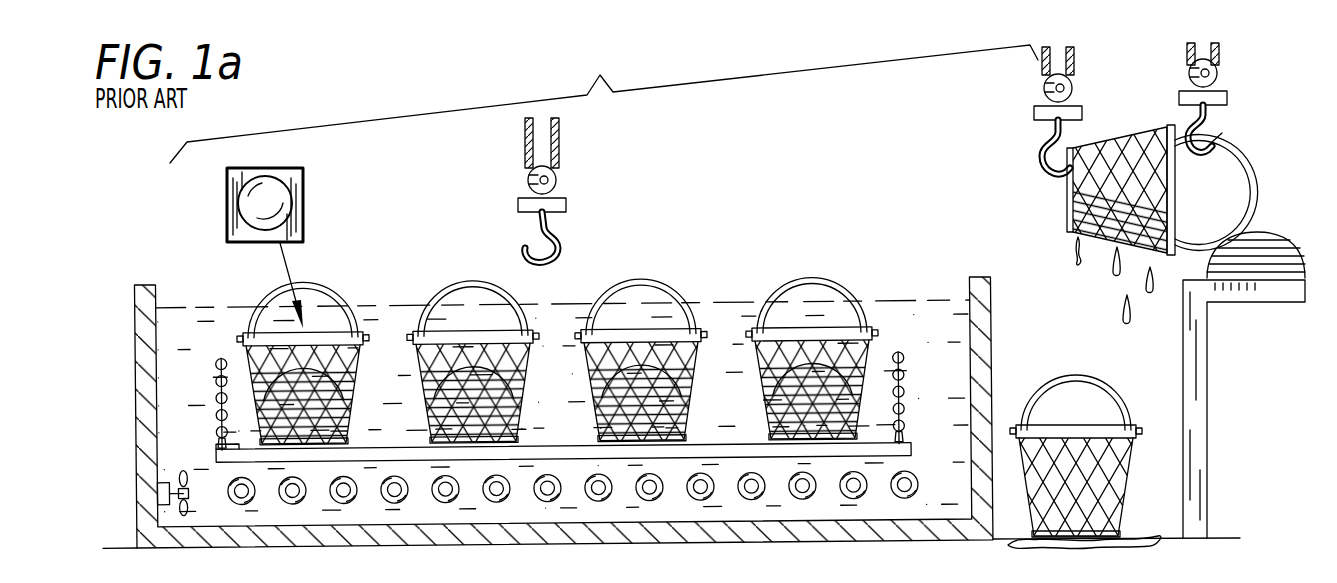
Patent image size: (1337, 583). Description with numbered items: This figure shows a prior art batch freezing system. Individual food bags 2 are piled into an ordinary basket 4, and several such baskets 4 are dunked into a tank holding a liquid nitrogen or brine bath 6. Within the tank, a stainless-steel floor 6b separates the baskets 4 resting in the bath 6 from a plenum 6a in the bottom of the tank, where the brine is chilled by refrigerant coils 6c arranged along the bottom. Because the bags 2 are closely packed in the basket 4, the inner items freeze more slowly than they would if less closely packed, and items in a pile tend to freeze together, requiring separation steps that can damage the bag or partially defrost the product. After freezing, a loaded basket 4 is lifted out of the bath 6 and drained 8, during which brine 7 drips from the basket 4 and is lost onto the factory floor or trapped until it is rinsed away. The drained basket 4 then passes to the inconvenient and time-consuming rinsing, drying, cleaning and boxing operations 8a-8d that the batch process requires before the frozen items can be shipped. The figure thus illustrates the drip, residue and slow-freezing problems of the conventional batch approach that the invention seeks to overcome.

The food bags 2 is at (302, 218).
The basket 4 is at (1122, 471).
The brine bath 6 is at (747, 385).
The plenum 6a is at (725, 492).
The floor 6b is at (218, 460).
The refrigerant coils 6c is at (546, 503).
The brine 7 is at (1125, 302).
The draining 8 is at (1058, 220).
The rinsing, drying, cleaning and boxing operations 8a-8d is at (1262, 258).